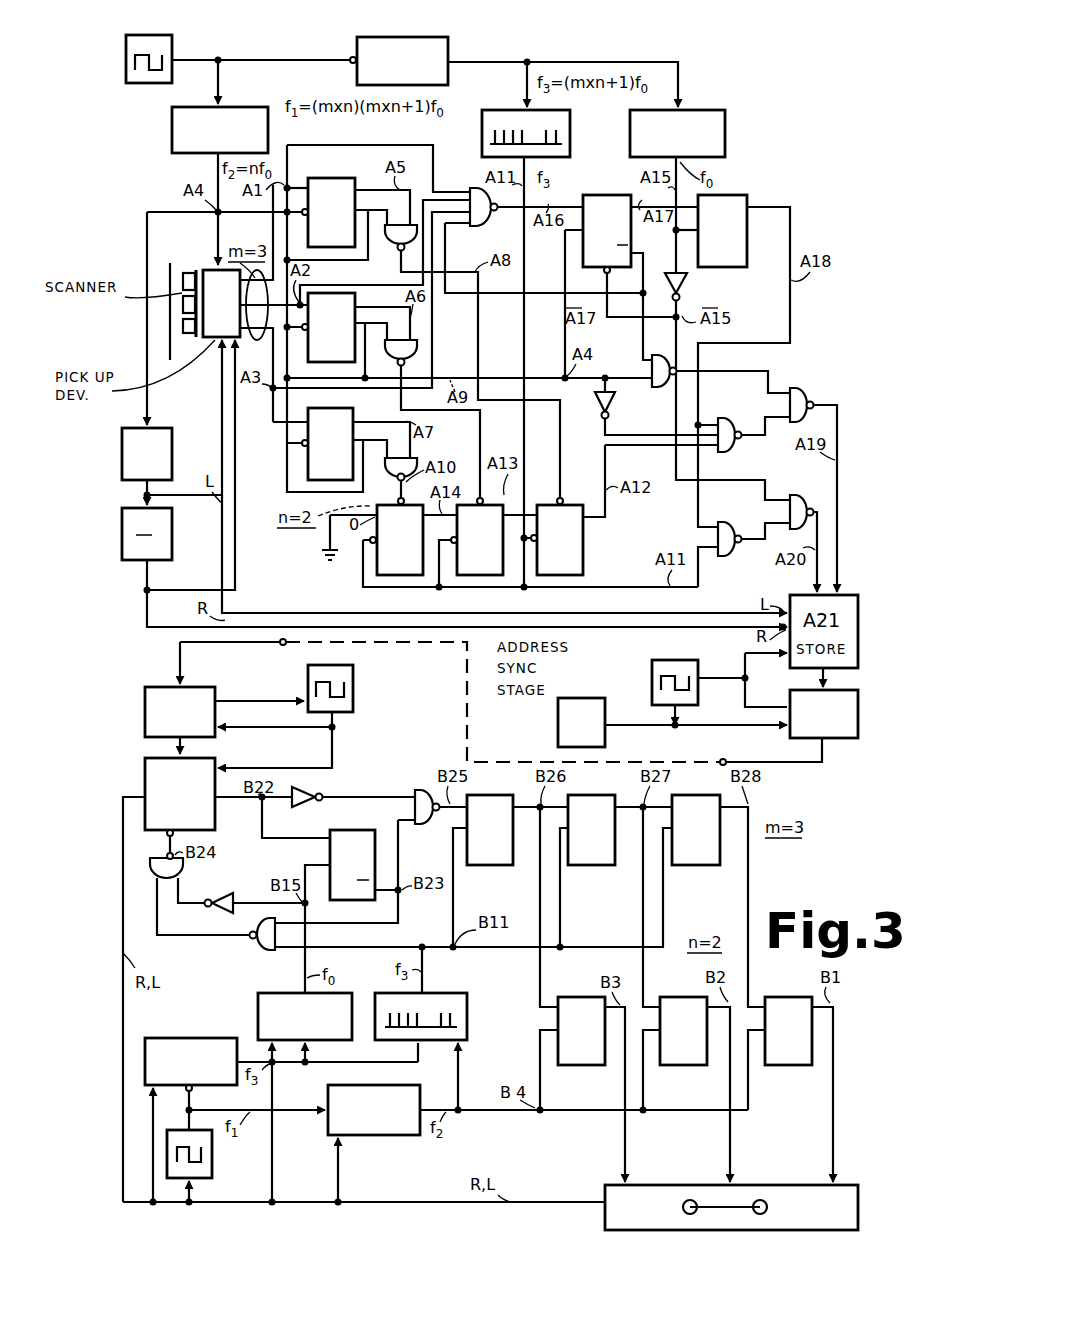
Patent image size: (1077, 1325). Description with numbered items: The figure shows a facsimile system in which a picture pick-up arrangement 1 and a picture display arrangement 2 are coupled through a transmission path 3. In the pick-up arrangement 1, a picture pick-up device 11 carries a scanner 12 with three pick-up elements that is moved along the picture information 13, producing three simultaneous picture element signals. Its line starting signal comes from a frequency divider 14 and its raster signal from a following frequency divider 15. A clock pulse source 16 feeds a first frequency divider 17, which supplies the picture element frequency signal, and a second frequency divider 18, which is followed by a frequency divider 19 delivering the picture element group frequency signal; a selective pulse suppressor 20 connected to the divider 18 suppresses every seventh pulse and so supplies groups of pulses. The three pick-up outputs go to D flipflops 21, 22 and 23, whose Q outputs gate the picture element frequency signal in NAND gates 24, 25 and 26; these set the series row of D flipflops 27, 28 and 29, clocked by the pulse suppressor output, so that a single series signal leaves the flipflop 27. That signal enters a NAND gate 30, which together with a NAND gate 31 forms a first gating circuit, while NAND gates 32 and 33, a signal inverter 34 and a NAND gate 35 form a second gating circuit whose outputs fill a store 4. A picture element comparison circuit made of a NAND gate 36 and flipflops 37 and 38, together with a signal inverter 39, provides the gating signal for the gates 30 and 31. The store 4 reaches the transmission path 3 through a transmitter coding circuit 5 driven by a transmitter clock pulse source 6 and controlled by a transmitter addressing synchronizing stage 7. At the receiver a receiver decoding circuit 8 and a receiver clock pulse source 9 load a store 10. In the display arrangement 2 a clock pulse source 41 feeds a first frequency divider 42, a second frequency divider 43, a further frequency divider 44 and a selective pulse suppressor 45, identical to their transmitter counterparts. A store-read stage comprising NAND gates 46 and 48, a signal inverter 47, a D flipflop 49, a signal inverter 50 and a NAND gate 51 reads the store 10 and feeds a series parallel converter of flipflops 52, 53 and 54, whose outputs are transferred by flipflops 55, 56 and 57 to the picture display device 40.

The picture pick-up arrangement 1 is at (614, 646).
The picture display arrangement 2 is at (410, 758).
The transmission path 3 is at (470, 696).
The store 4 is at (786, 658).
The transmitter coding circuit 5 is at (792, 738).
The transmitter clock pulse source 6 is at (652, 680).
The transmitter addressing synchronizing stage 7 is at (558, 715).
The receiver decoding circuit 8 is at (198, 687).
The receiver clock pulse source 9 is at (360, 678).
The store 10 is at (210, 760).
The picture pick-up device 11 is at (217, 339).
The scanner 12 is at (180, 268).
The picture information 13 is at (176, 240).
The frequency divider 14 is at (150, 428).
The frequency divider 15 is at (160, 560).
The clock pulse source 16 is at (150, 78).
The first frequency divider 17 is at (172, 130).
The second frequency divider 18 is at (452, 72).
The frequency divider 19 is at (725, 130).
The selective pulse suppressor 20 is at (570, 132).
The D flipflop 21 is at (335, 178).
The D flipflop 22 is at (355, 300).
The D flipflop 23 is at (340, 408).
The NAND gate 24 is at (396, 240).
The NAND gate 25 is at (396, 352).
The NAND gate 26 is at (396, 470).
The D flipflop 27 is at (562, 575).
The D flipflop 28 is at (482, 575).
The D flipflop 29 is at (402, 575).
The NAND gate 30 is at (745, 448).
The NAND gate 31 is at (738, 555).
The NAND gate 32 is at (805, 392).
The NAND gate 33 is at (808, 497).
The signal inverter 34 is at (612, 404).
The NAND gate 35 is at (648, 360).
The NAND gate 36 is at (473, 186).
The flipflop 37 is at (605, 195).
The flipflop 38 is at (735, 190).
The signal inverter 39 is at (690, 282).
The picture display device 40 is at (610, 1185).
The clock pulse source 41 is at (215, 1160).
The first frequency divider 42 is at (380, 1136).
The second frequency divider 43 is at (100, 1080).
The frequency divider 44 is at (268, 992).
The selective pulse suppressor 45 is at (468, 1015).
The NAND gate 46 is at (158, 856).
The signal inverter 47 is at (228, 893).
The NAND gate 48 is at (258, 948).
The D flipflop 49 is at (376, 892).
The signal inverter 50 is at (308, 804).
The NAND gate 51 is at (412, 805).
The flipflop 52 is at (492, 865).
The flipflop 53 is at (594, 865).
The flipflop 54 is at (699, 865).
The flipflop 55 is at (796, 1065).
The flipflop 56 is at (688, 1065).
The flipflop 57 is at (582, 1065).